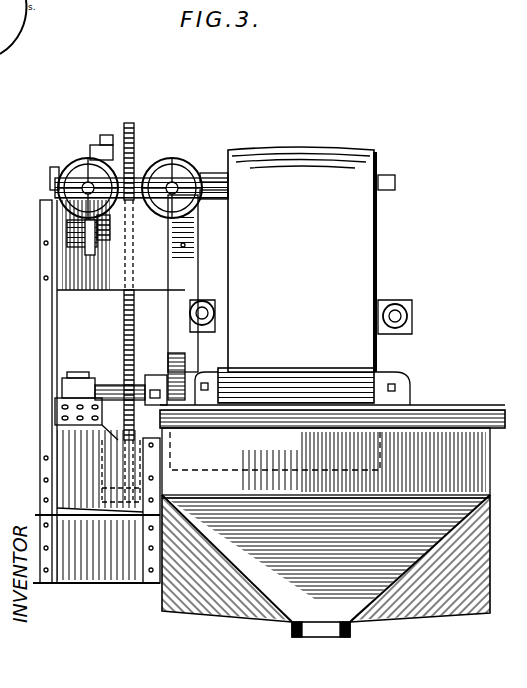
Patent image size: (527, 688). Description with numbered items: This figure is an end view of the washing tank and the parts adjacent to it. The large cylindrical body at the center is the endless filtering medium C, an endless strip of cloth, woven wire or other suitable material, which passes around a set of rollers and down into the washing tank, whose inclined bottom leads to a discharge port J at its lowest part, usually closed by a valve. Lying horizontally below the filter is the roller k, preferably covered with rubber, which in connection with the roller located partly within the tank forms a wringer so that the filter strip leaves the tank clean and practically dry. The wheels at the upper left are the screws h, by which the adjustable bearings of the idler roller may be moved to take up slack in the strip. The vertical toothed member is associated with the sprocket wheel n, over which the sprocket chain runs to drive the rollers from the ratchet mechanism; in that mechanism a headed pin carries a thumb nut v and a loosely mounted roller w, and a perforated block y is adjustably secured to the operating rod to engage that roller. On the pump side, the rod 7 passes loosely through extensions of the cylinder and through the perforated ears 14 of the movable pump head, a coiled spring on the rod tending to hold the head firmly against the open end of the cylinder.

The screws h is at (86, 184).
The sprocket wheel n is at (135, 138).
The perforated block y is at (72, 222).
The roller w is at (70, 235).
The filtering medium C is at (311, 259).
The perforated ears 14 is at (206, 300).
The rod 7 is at (408, 309).
The roller k is at (297, 376).
The thumb nut v is at (490, 457).
The discharge port J is at (352, 632).